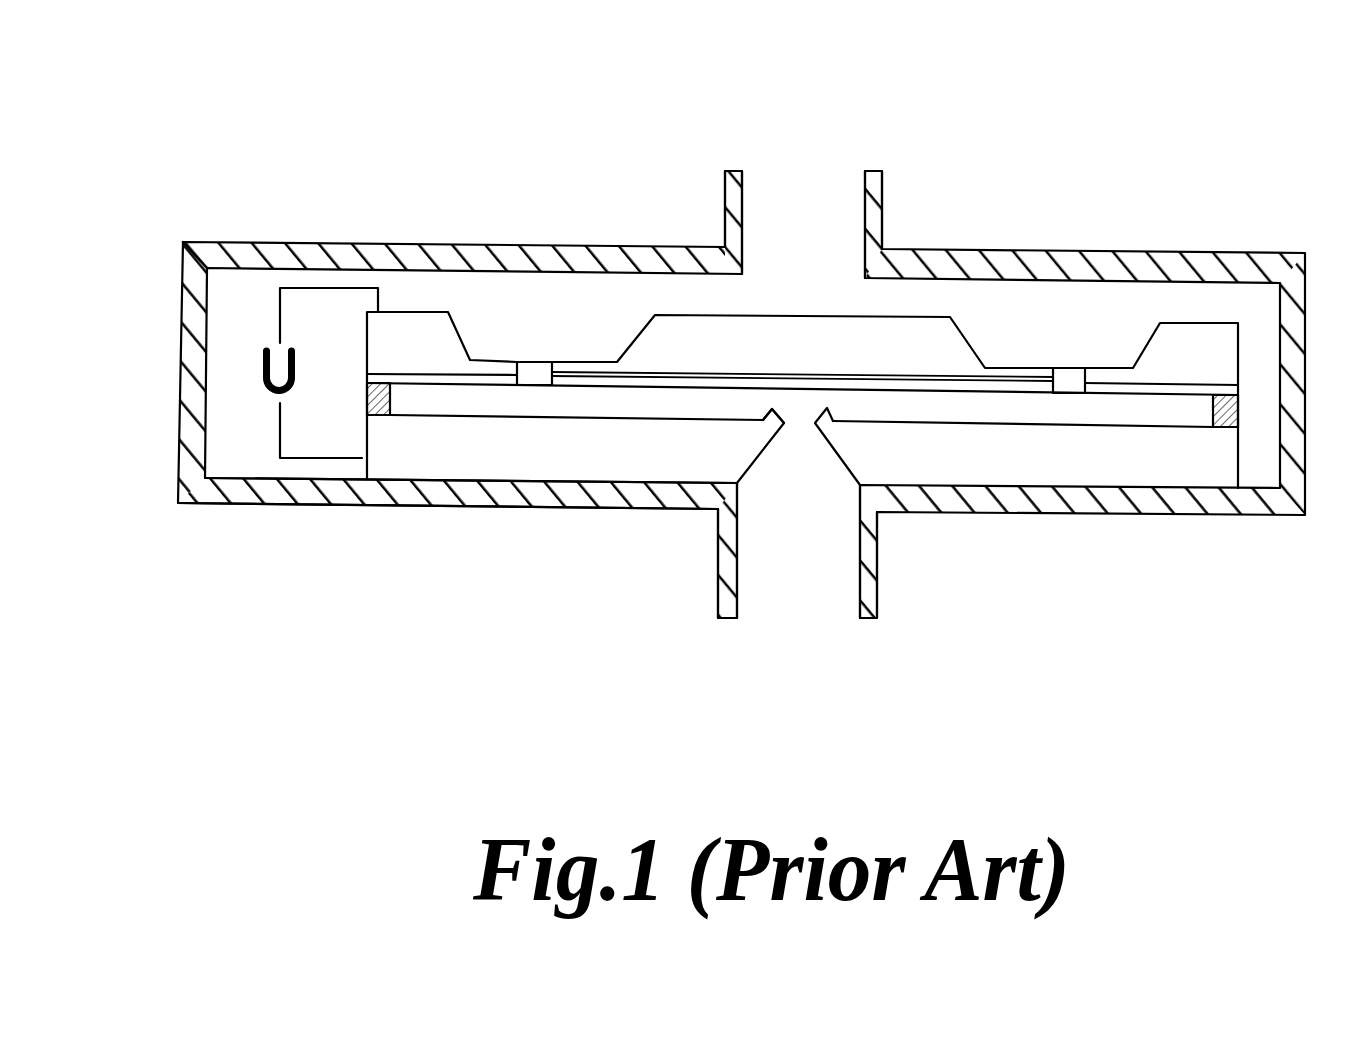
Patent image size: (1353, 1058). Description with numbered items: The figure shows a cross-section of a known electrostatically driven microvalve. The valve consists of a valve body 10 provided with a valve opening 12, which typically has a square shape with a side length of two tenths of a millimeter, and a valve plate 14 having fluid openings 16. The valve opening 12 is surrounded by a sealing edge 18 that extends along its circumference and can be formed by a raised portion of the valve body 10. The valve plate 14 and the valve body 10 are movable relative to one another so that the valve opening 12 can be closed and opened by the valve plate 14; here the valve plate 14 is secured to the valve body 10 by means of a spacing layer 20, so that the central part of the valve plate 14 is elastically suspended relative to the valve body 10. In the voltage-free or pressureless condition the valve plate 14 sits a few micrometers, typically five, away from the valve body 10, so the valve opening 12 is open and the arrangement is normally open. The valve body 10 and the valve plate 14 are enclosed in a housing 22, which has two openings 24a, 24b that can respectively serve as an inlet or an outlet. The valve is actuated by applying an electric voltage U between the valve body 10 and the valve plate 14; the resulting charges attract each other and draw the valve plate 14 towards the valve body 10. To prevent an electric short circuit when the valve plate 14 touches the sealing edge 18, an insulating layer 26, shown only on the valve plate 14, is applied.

The valve body 10 is at (1015, 450).
The valve opening 12 is at (797, 417).
The valve plate 14 is at (932, 340).
The fluid openings 16 is at (532, 362).
The sealing edge 18 is at (772, 408).
The spacing layer 20 is at (312, 288).
The housing 22 is at (353, 503).
The opening 24a is at (795, 187).
The opening 24b is at (795, 577).
The insulating layer 26 is at (578, 388).